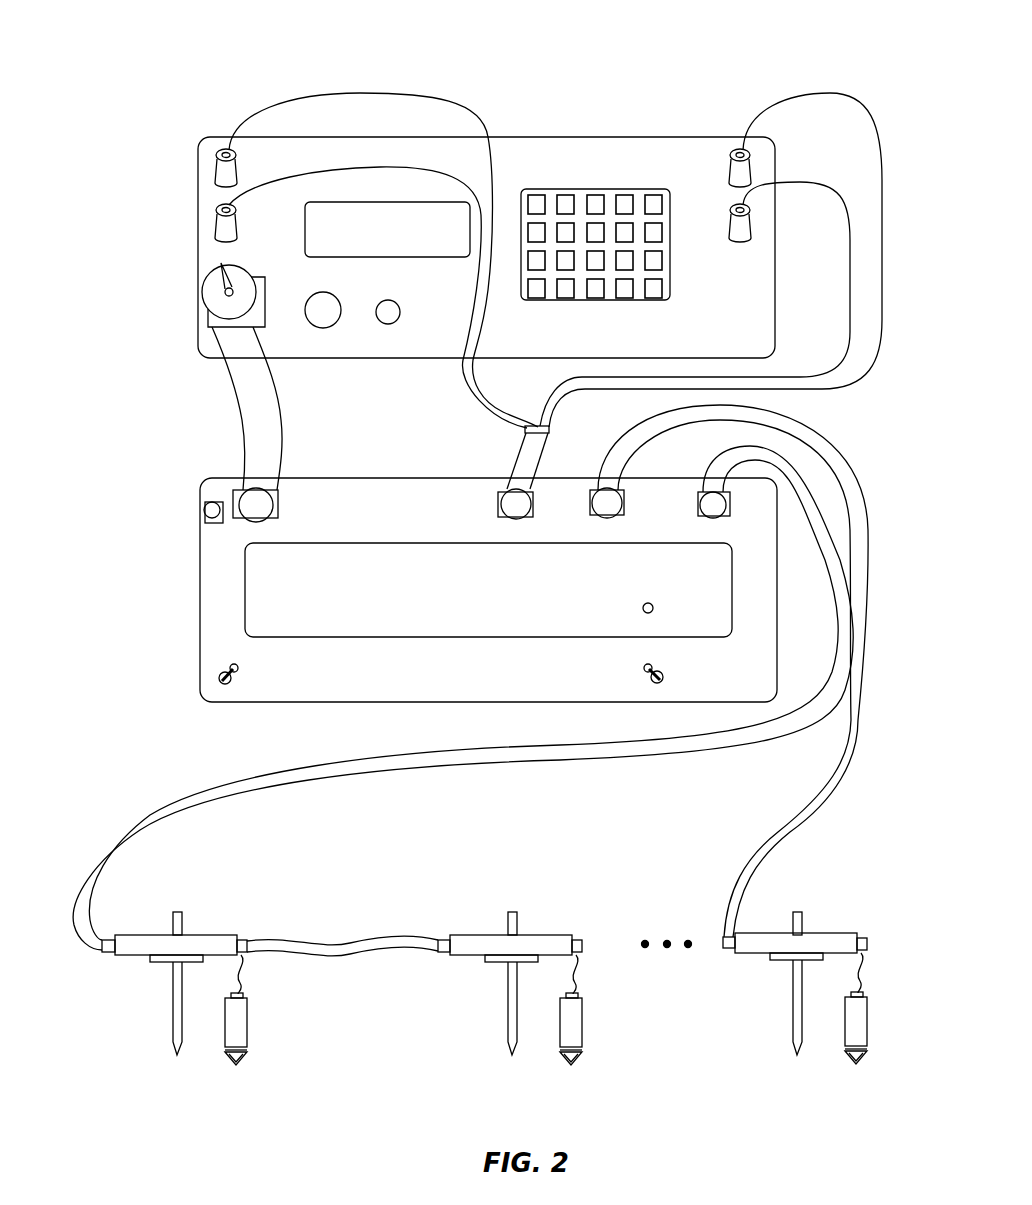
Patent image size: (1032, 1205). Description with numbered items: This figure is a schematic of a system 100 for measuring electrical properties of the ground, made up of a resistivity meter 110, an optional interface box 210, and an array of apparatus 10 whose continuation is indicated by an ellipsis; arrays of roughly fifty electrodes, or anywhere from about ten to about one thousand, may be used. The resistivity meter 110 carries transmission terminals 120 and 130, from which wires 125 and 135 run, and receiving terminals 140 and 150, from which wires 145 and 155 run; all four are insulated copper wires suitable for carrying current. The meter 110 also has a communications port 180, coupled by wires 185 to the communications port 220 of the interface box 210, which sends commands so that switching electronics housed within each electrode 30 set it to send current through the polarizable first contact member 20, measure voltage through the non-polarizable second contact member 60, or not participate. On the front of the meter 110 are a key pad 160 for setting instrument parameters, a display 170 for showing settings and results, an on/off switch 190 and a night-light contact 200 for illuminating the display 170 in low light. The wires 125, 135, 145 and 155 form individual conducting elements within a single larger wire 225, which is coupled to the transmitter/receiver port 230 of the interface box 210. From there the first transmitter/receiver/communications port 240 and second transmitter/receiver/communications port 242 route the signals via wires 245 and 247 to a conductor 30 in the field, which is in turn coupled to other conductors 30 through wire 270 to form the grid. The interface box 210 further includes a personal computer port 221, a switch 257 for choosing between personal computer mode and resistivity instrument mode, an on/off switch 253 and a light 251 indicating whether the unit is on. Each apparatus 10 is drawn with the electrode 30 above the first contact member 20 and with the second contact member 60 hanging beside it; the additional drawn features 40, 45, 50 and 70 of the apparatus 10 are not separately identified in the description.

The system 100 is at (672, 62).
The resistivity meter 110 is at (138, 288).
The transmission terminal 120 is at (259, 165).
The wire 125 is at (383, 245).
The transmission terminal 130 is at (259, 220).
The wire 135 is at (378, 266).
The receiving terminal 140 is at (780, 162).
The wire 145 is at (723, 244).
The receiving terminal 150 is at (780, 220).
The wire 155 is at (695, 304).
The key pad 160 is at (629, 244).
The display 170 is at (387, 217).
The communications port 180 is at (266, 295).
The wires 185 is at (281, 408).
The on/off switch 190 is at (346, 299).
The night-light contact 200 is at (413, 301).
The interface box 210 is at (138, 645).
The communications port 220 is at (293, 505).
The personal computer port 221 is at (178, 501).
The larger wire 225 is at (561, 448).
The transmitter/receiver port 230 is at (482, 503).
The first transmitter/receiver/communications port 240 is at (638, 498).
The second transmitter/receiver/communications port 242 is at (733, 517).
The wire 245 is at (733, 554).
The wire 247 is at (821, 828).
The light 251 is at (616, 593).
The on/off switch 253 is at (618, 669).
The switch 257 is at (262, 670).
The wire 270 is at (342, 928).
The apparatus 10 is at (205, 875).
The first contact member 20 is at (460, 1007).
The electrode 30 is at (142, 903).
The body 40 is at (488, 927).
The plate 45 is at (465, 974).
The connector 50 is at (507, 933).
The second contact member 60 is at (262, 1022).
The wire 70 is at (580, 973).